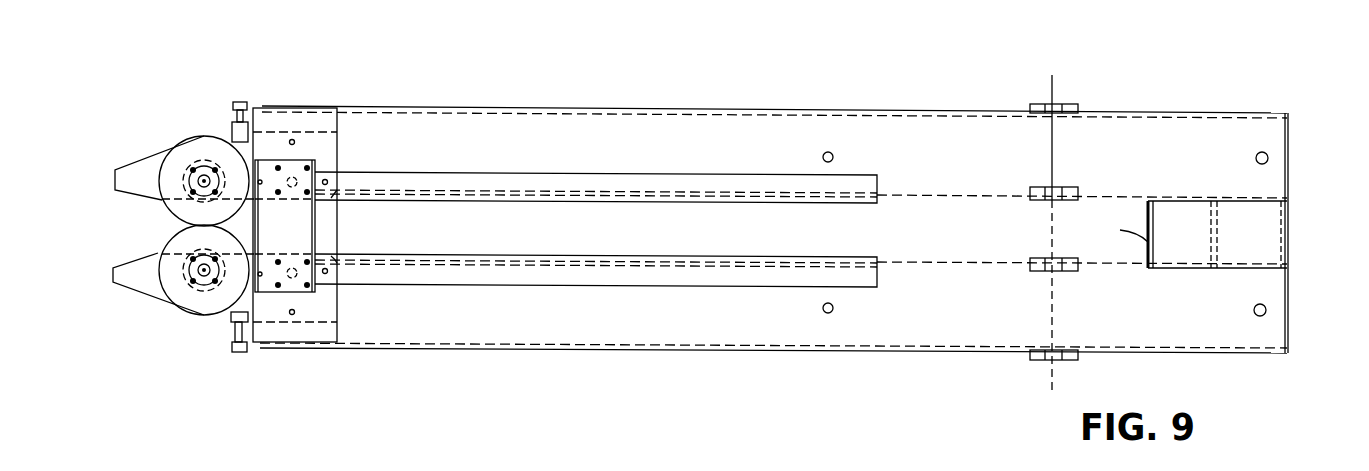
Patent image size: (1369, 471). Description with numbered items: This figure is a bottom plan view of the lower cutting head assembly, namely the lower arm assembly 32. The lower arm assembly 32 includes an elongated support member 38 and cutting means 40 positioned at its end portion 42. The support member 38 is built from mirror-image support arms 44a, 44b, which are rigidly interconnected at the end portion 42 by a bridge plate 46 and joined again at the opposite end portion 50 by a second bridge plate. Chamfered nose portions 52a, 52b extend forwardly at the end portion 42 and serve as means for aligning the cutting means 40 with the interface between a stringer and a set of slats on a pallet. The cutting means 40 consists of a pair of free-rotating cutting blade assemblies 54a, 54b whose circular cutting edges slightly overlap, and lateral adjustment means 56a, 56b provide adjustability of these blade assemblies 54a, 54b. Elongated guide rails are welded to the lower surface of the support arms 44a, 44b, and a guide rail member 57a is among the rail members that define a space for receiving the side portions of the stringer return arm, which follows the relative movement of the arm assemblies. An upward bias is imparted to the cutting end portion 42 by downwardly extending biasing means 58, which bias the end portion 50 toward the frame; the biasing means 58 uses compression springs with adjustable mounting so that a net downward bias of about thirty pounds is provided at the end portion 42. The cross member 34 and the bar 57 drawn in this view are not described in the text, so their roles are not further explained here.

The lower arm assembly 32 is at (745, 86).
The cross member 34 is at (1055, 94).
The elongated support member 38 is at (788, 352).
The cutting means 40 is at (203, 135).
The end portion 42 is at (297, 346).
The support arm 44a is at (850, 350).
The support arm 44b is at (853, 108).
The bridge plate 46 is at (315, 240).
The opposite end portion 50 is at (1229, 206).
The chamfered nose portion 52a is at (133, 293).
The chamfered nose portion 52b is at (150, 158).
The cutting blade assembly 54a is at (210, 317).
The cutting blade assembly 54b is at (168, 152).
The lateral adjustment means 56a is at (237, 352).
The lateral adjustment means 56b is at (240, 101).
The upper guide bar 57 is at (487, 173).
The guide rail member 57a is at (477, 285).
The biasing means 58 is at (1268, 155).